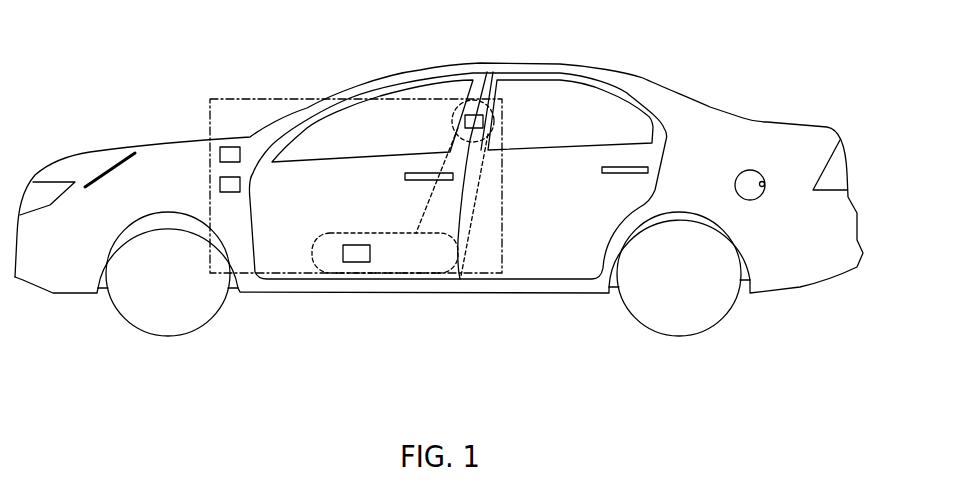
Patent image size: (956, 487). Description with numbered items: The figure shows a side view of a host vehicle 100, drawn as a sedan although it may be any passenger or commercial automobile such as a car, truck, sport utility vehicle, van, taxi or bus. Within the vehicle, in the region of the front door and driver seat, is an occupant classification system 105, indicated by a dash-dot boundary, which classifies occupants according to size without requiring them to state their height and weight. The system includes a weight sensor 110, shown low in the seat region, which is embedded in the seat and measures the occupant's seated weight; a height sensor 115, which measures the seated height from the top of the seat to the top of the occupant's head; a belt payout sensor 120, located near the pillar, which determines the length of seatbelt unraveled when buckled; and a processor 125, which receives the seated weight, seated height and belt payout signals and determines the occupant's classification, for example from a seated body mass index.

The host vehicle 100 is at (487, 63).
The occupant classification system 105 is at (250, 99).
The weight sensor 110 is at (357, 262).
The height sensor 115 is at (230, 147).
The belt payout sensor 120 is at (483, 122).
The processor 125 is at (240, 184).